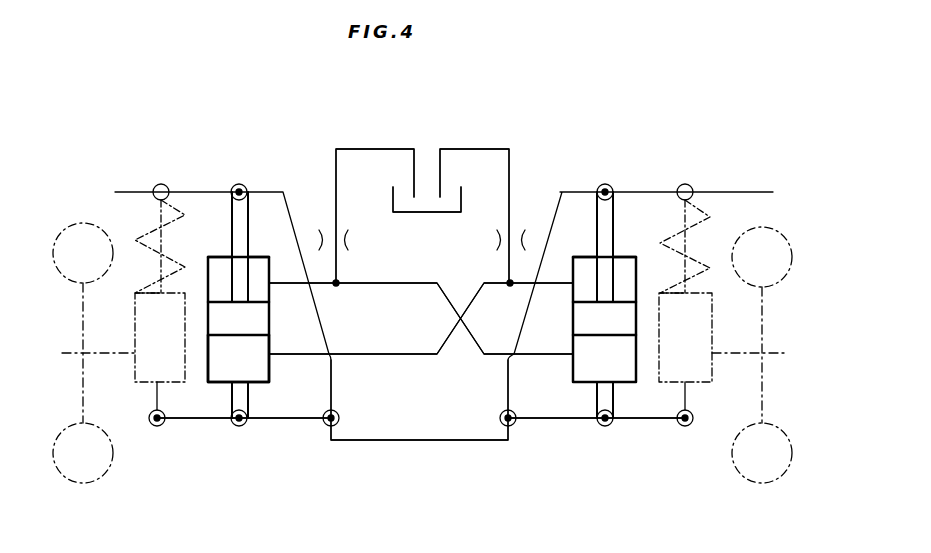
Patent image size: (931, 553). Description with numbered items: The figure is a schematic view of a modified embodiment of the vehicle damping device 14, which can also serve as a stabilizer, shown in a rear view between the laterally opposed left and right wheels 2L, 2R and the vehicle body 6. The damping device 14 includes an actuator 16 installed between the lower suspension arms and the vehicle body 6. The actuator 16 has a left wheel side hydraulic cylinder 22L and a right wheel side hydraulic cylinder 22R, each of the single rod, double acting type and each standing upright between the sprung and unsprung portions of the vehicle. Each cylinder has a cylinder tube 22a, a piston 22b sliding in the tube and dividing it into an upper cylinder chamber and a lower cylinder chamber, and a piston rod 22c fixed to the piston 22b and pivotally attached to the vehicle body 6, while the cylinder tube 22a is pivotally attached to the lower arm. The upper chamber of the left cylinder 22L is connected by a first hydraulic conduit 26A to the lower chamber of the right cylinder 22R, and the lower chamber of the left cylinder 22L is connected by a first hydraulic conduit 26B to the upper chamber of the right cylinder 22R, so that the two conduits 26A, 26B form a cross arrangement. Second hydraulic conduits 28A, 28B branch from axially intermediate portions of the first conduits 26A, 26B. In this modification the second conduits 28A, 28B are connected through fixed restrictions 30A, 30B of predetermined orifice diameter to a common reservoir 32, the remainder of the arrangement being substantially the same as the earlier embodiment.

The left wheel 2L is at (70, 284).
The right wheel 2R is at (742, 478).
The vehicle body 6 is at (430, 443).
The damping device 14 is at (251, 71).
The actuator 16 is at (497, 133).
The left wheel side hydraulic cylinder 22L is at (257, 392).
The right wheel side hydraulic cylinder 22R is at (563, 388).
The cylinder tube 22a is at (270, 369).
The piston 22b is at (262, 312).
The piston rod 22c is at (232, 240).
The first hydraulic conduit 26A is at (388, 286).
The first hydraulic conduit 26B is at (405, 358).
The second hydraulic conduit 28A is at (336, 154).
The second hydraulic conduit 28B is at (509, 154).
The fixed restriction 30A is at (347, 240).
The fixed restriction 30B is at (498, 241).
The reservoir 32 is at (393, 197).